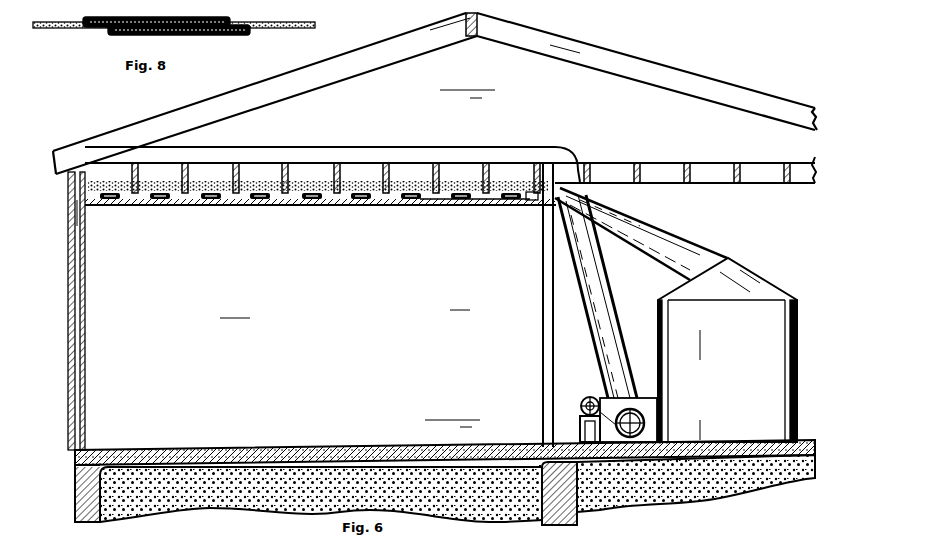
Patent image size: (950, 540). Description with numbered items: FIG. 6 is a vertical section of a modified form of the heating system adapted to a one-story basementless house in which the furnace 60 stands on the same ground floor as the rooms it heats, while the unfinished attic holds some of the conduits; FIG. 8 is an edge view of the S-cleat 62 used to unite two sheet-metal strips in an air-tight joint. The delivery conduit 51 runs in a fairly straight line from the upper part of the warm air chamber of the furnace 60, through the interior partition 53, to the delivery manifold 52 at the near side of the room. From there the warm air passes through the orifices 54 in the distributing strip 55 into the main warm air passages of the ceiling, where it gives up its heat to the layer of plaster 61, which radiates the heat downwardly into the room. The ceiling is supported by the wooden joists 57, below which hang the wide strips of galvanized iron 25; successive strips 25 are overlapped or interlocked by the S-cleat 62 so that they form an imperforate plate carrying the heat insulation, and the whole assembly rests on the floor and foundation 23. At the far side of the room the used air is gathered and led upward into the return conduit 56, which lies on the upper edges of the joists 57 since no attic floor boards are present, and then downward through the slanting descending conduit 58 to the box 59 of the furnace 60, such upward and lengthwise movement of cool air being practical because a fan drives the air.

In FIG. 6, the floor slab and foundation 23 is at (479, 523).
In FIG. 8, the strip of galvanized iron 25 is at (62, 30).
In FIG. 6, the delivery conduit 51 is at (662, 229).
In FIG. 6, the delivery manifold 52 is at (532, 205).
In FIG. 6, the interior partition 53 is at (543, 245).
In FIG. 6, the orifices 54 is at (507, 206).
In FIG. 6, the distributing strip 55 is at (445, 206).
In FIG. 6, the return conduit 56 is at (268, 156).
In FIG. 6, the joists 57 is at (338, 177).
In FIG. 6, the descending conduit 58 is at (596, 273).
In FIG. 6, the box 59 is at (647, 405).
In FIG. 6, the furnace 60 is at (727, 350).
In FIG. 6, the layer of plaster 61 is at (290, 207).
In FIG. 8, the S-cleat 62 is at (220, 33).